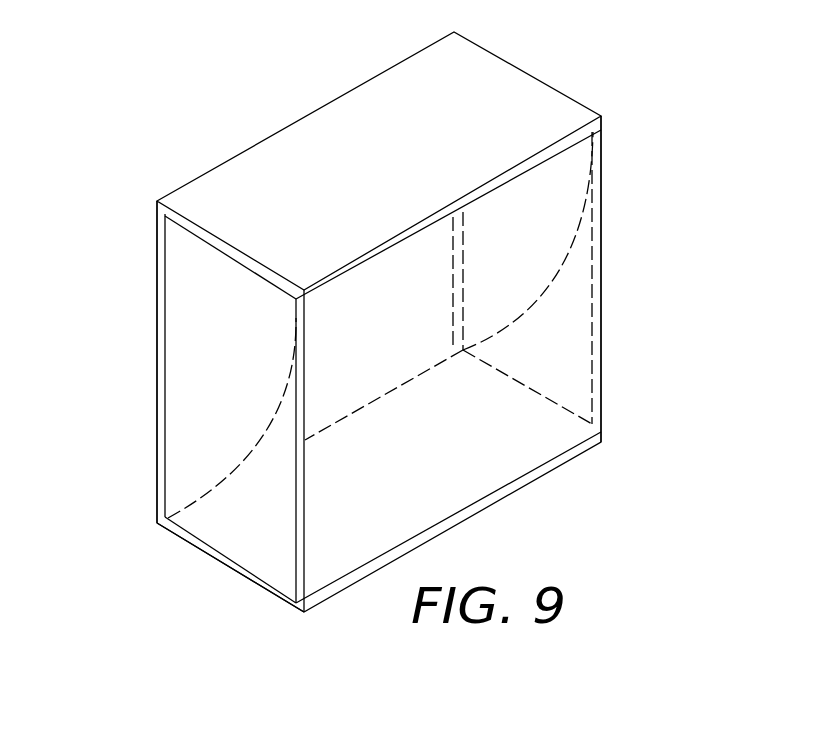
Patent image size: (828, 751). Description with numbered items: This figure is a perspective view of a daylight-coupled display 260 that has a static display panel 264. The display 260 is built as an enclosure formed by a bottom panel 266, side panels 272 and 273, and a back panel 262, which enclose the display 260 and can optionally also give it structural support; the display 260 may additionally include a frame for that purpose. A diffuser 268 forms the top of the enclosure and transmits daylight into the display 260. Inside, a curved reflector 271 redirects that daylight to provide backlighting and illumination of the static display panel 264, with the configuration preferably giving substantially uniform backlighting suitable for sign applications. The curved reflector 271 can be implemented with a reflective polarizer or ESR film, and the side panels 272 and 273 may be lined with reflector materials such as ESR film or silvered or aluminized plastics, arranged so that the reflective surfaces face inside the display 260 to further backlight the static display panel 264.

The daylight-coupled display 260 is at (580, 61).
The back panel 262 is at (601, 277).
The static display panel 264 is at (162, 335).
The bottom panel 266 is at (177, 530).
The diffuser 268 is at (515, 82).
The curved reflector 271 is at (265, 432).
The side panel 272 is at (247, 361).
The side panel 273 is at (565, 221).